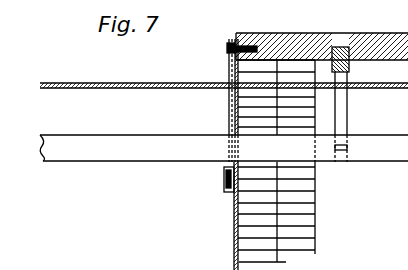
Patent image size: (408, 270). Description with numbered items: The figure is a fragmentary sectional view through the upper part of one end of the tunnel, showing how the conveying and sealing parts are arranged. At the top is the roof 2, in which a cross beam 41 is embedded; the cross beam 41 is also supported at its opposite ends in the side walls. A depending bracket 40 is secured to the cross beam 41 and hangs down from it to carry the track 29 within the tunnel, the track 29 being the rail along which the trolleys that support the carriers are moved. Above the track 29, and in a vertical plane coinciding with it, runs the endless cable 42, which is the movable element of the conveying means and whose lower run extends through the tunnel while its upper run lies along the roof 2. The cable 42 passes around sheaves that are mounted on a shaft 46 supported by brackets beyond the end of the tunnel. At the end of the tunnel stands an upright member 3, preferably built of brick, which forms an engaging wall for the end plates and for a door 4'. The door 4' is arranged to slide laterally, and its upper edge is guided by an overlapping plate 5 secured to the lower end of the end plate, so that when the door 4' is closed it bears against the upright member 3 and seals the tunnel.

The roof 2 is at (377, 33).
The cross beam 41 is at (350, 65).
The depending bracket 40 is at (347, 119).
The endless cable 42 is at (112, 88).
The shaft 46 is at (229, 109).
The upright member 3 is at (311, 227).
The track 29 is at (374, 156).
The overlapping plate 5 is at (227, 192).
The door 4' is at (221, 216).